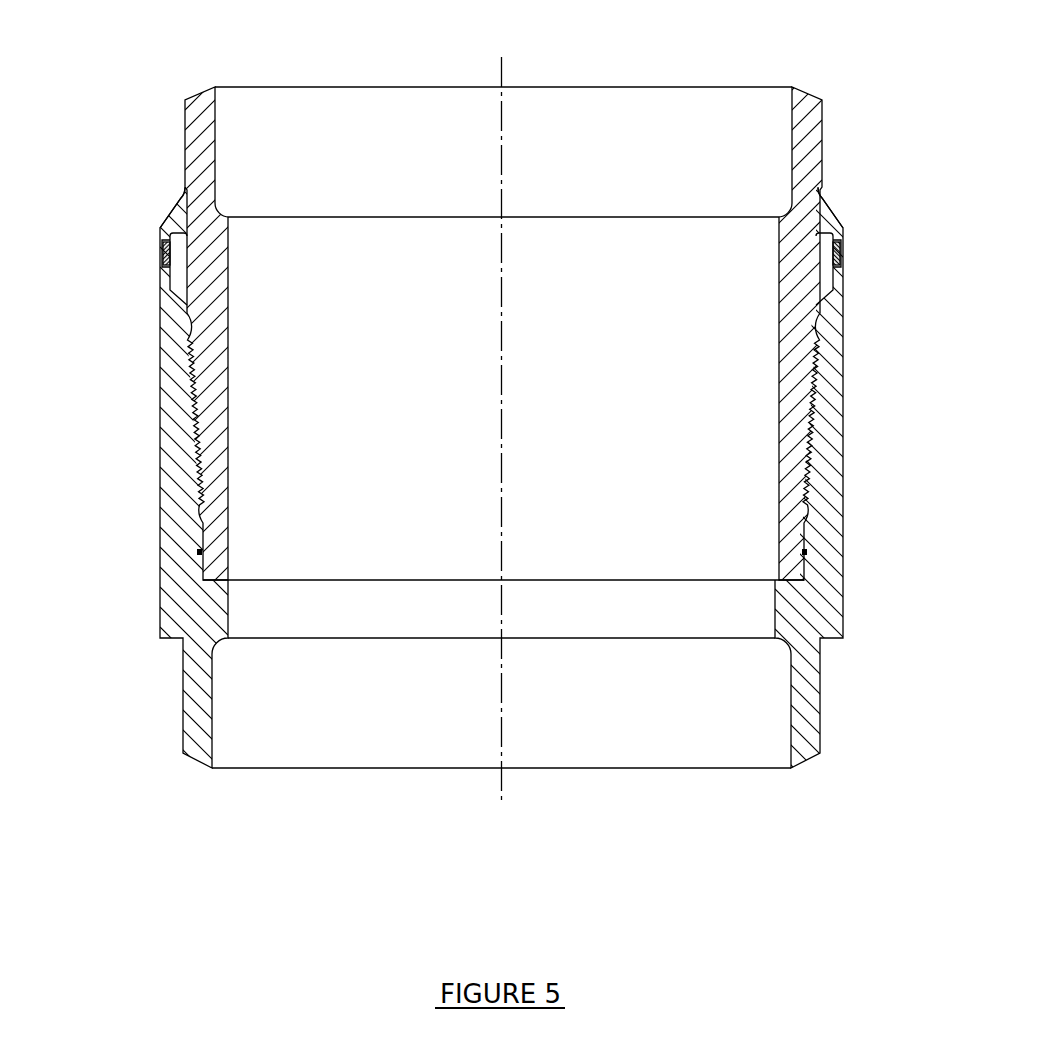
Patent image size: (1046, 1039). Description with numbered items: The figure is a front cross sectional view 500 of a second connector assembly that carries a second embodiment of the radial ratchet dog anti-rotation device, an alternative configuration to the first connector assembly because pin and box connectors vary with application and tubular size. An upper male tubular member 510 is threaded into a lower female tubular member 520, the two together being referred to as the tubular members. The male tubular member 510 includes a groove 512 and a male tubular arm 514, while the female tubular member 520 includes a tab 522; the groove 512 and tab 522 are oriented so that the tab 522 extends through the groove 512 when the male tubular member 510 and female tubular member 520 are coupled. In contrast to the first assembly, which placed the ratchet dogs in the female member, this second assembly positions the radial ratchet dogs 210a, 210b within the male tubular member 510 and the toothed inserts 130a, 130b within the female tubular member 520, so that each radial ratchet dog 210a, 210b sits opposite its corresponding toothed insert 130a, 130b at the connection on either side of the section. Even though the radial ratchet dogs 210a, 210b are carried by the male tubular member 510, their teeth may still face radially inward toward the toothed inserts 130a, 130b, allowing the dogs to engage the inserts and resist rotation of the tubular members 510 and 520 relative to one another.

The front cross sectional view 500 is at (233, 810).
The male tubular member 510 is at (822, 135).
The female tubular member 520 is at (845, 590).
The groove 512 is at (167, 231).
The male tubular arm 514 is at (161, 229).
The tab 522 is at (168, 262).
The radial ratchet dog 210a is at (840, 256).
The radial ratchet dog 210b is at (163, 256).
The toothed insert 130a is at (831, 250).
The toothed insert 130b is at (172, 250).